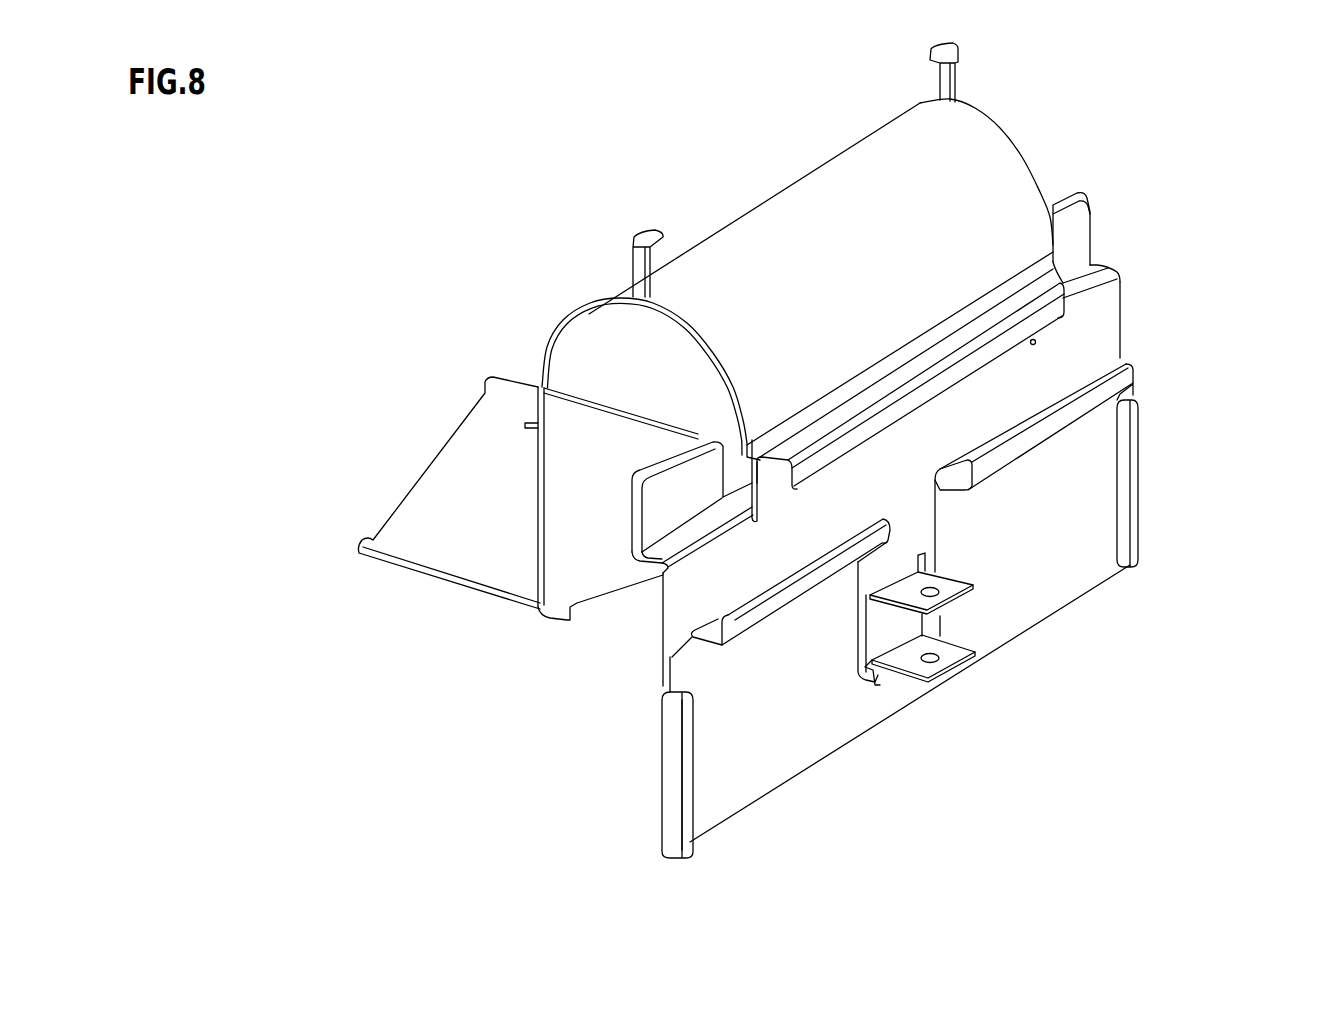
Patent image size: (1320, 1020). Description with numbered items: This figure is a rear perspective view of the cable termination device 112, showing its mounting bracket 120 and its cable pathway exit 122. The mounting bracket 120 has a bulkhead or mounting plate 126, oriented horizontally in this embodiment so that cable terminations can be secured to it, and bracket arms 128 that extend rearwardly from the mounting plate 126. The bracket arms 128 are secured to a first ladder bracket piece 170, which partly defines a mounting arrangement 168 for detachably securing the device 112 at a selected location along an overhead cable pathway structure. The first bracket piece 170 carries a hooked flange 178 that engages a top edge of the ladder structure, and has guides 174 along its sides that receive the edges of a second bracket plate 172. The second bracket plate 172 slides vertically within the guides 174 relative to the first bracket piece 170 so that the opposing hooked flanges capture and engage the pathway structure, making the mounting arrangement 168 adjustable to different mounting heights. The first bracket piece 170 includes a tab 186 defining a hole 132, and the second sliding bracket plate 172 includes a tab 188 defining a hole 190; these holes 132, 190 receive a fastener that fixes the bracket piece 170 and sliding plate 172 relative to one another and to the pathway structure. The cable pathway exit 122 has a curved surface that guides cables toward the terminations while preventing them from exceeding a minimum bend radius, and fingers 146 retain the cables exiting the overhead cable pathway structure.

The cable termination device 112 is at (472, 241).
The mounting bracket 120 is at (1168, 348).
The cable pathway exit 122 is at (968, 138).
The mounting plate 126 is at (393, 568).
The bracket arms 128 is at (563, 575).
The hole 132 is at (940, 589).
The fingers 146 is at (637, 262).
The mounting arrangement 168 is at (1133, 225).
The first ladder bracket piece 170 is at (677, 608).
The second bracket plate 172 is at (707, 752).
The guides 174 is at (672, 742).
The hooked flange 178 is at (898, 420).
The tab 186 is at (970, 590).
The tab 188 is at (905, 665).
The hole 190 is at (940, 655).